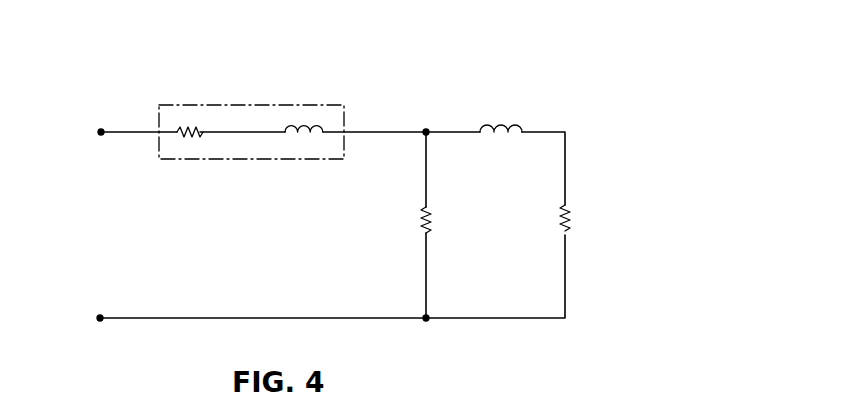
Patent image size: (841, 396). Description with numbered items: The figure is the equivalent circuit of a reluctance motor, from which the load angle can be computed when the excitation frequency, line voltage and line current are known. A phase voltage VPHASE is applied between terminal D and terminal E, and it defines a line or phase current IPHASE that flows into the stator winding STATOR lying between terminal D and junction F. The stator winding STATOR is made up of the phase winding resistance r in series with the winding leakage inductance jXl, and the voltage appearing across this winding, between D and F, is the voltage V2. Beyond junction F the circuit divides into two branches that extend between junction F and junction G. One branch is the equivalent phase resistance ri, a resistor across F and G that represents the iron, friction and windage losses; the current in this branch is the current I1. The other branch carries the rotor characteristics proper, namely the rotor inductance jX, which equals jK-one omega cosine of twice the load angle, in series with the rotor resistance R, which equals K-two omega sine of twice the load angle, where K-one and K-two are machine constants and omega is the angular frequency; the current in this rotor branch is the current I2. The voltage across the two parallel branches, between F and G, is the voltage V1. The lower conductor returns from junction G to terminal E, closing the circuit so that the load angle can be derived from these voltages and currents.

The terminal D is at (100, 130).
The terminal E is at (98, 320).
The junction F is at (427, 127).
The junction G is at (429, 320).
The stator winding STATOR is at (217, 159).
The phase winding resistance r is at (189, 127).
The winding leakage inductance jXl is at (300, 126).
The rotor inductance jX is at (490, 126).
The equivalent phase resistance ri is at (431, 214).
The rotor resistance R is at (569, 224).
The voltage V2 is at (408, 126).
The voltage V1 is at (417, 139).
The current I2 is at (476, 142).
The current I1 is at (435, 150).
The line current IPHASE is at (151, 153).
The phase voltage VPHASE is at (99, 141).